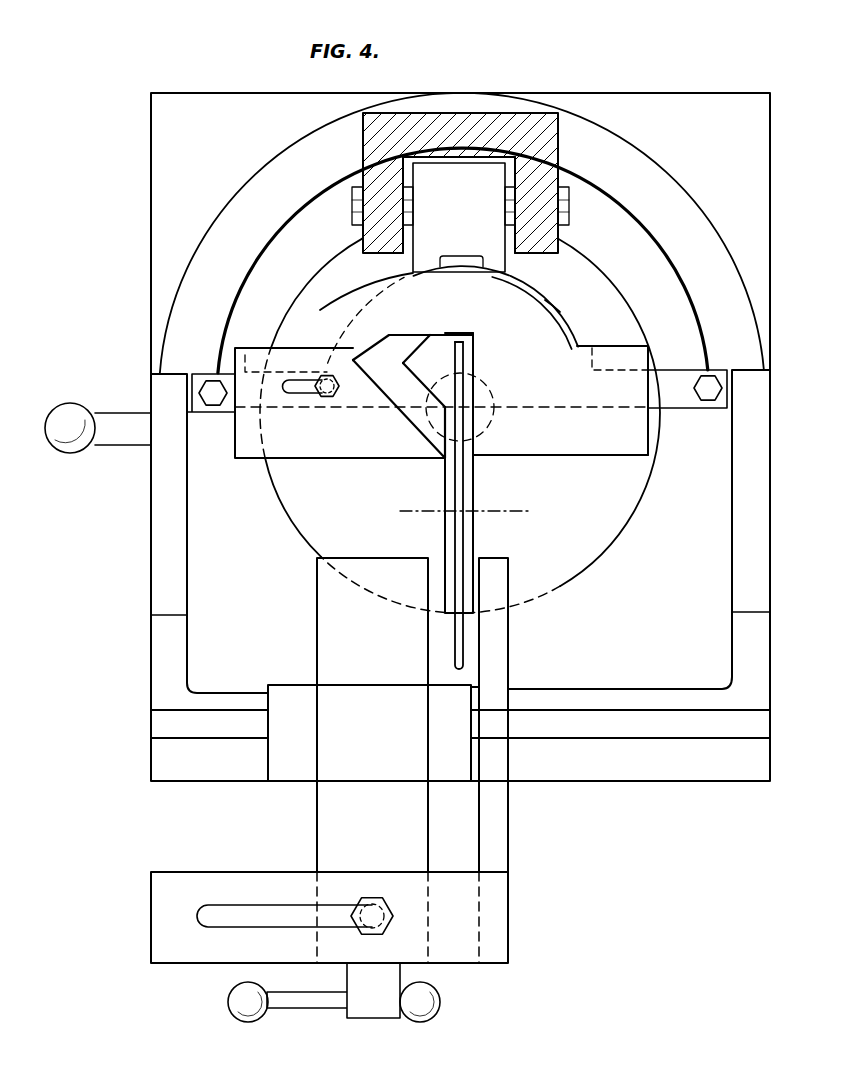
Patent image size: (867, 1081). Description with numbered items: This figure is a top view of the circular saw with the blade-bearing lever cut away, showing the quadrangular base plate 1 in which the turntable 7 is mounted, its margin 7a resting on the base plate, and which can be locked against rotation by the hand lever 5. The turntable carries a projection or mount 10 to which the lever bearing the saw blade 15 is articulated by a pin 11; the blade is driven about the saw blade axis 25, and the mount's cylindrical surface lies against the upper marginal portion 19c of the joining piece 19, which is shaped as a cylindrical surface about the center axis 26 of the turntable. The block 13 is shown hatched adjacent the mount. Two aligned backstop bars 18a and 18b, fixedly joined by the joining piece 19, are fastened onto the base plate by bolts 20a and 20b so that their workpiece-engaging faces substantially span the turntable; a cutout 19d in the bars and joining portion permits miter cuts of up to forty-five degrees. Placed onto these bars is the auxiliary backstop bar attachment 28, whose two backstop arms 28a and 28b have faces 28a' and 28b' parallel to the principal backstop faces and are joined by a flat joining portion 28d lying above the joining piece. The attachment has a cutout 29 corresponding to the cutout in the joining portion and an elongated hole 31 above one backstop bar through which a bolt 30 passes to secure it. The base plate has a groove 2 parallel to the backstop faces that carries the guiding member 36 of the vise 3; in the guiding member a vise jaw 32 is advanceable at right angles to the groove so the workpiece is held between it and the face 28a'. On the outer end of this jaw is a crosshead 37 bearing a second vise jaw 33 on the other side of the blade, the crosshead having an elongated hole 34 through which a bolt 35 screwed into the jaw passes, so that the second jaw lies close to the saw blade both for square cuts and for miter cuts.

The base plate 1 is at (682, 100).
The groove 2 is at (150, 712).
The vise 3 is at (337, 981).
The hand lever 5 is at (85, 410).
The turntable 7 is at (622, 520).
The margin of the disc 7a is at (470, 544).
The projection or mount 10 is at (462, 178).
The pin 11 is at (568, 200).
The upper clamp block 13 is at (368, 144).
The saw blade 15 is at (455, 531).
The backstop bar 18a is at (234, 358).
The backstop bar 18b is at (652, 390).
The joining piece 19 is at (564, 332).
The upper marginal portion 19c is at (548, 312).
The cutout 19d is at (450, 336).
The bolt 20a is at (213, 406).
The bolt 20b is at (708, 402).
The saw blade axis 25 is at (490, 511).
The center axis 26 is at (474, 392).
The auxiliary backstop bar attachment 28 is at (337, 470).
The backstop arm 28a is at (377, 473).
The face 28a' is at (399, 430).
The backstop arm 28b is at (624, 436).
The face 28b' is at (548, 473).
The flat joining portion 28d is at (316, 332).
The cutout 29 is at (390, 346).
The bolt 30 is at (327, 399).
The elongated hole 31 is at (294, 398).
The vise jaw 32 is at (317, 608).
The second vise jaw 33 is at (508, 635).
The elongated hole 34 is at (219, 912).
The bolt 35 is at (358, 900).
The guiding member 36 is at (296, 770).
The crosshead 37 is at (450, 947).